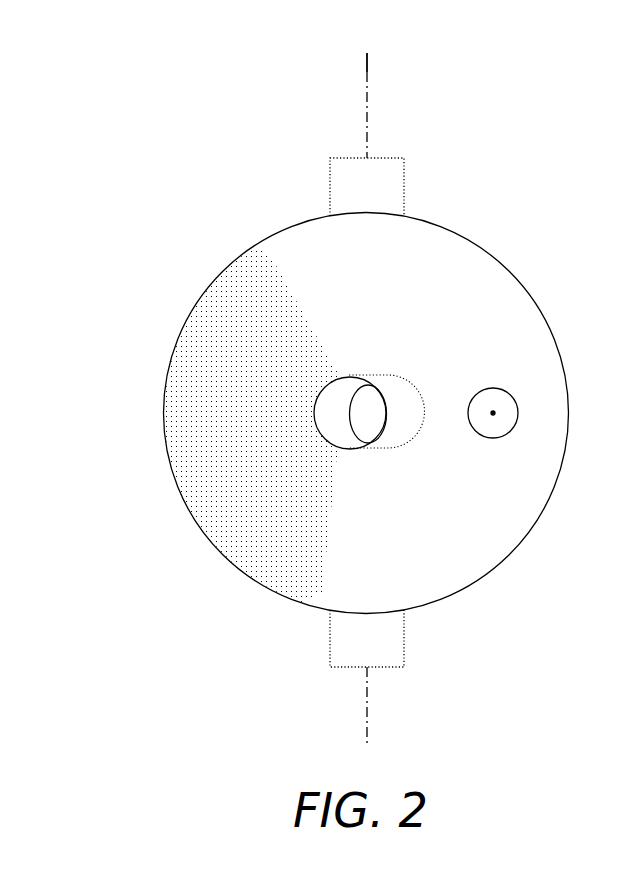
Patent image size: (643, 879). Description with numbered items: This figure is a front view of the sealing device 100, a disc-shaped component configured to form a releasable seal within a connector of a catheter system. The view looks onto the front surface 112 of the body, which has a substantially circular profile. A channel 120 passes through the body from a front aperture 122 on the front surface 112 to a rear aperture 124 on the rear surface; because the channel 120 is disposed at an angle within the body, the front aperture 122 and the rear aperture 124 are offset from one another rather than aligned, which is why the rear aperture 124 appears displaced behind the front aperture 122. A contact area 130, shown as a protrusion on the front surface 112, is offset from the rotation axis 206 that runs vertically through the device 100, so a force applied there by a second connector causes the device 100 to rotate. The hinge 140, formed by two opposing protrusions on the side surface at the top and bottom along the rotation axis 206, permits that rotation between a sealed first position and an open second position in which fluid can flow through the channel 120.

The device 100 is at (250, 80).
The front surface 112 is at (471, 510).
The channel 120 is at (352, 476).
The front aperture 122 is at (327, 418).
The rear aperture 124 is at (393, 400).
The contact area 130 is at (508, 405).
The hinge 140 is at (377, 168).
The rotation axis 206 is at (368, 65).